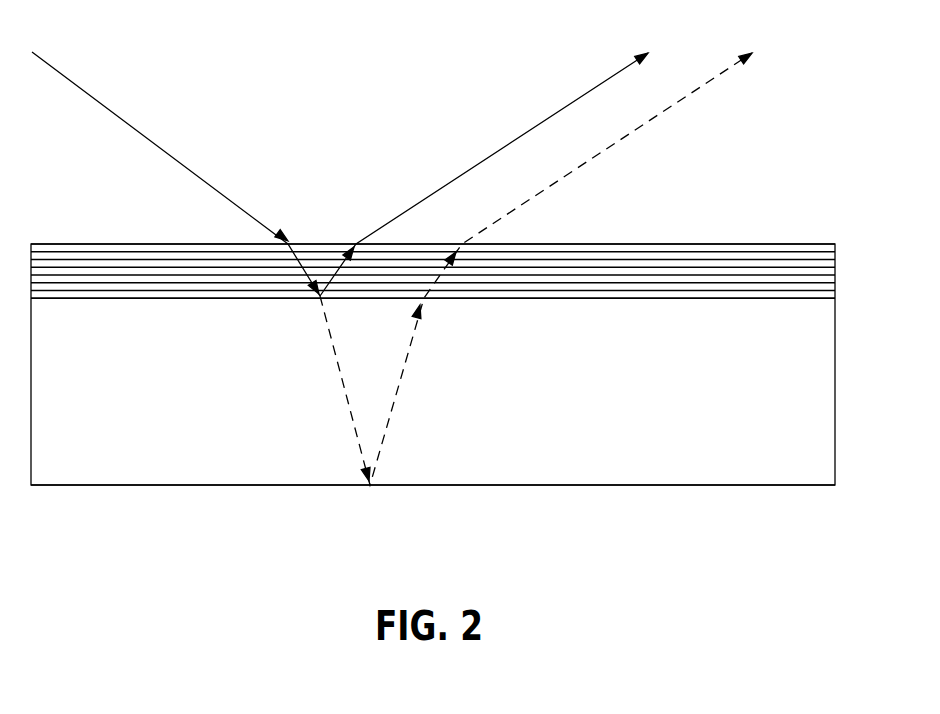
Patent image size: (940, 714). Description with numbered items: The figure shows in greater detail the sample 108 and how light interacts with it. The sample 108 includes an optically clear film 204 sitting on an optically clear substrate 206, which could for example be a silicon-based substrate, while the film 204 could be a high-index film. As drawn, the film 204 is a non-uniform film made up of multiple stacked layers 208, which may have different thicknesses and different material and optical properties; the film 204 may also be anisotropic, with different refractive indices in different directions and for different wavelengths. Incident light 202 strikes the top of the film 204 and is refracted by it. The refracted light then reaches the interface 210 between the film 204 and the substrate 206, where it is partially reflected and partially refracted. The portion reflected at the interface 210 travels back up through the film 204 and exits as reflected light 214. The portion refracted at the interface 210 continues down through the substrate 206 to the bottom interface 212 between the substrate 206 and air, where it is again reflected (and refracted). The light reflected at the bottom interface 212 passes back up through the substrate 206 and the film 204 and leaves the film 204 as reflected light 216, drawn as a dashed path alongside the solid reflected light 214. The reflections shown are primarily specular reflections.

The sample 108 is at (755, 210).
The light 202 is at (184, 164).
The film 204 is at (471, 254).
The substrate 206 is at (817, 352).
The layer 208 is at (837, 282).
The interface 210 is at (593, 300).
The bottom interface 212 is at (700, 485).
The reflected light 214 is at (492, 153).
The reflected light 216 is at (562, 177).